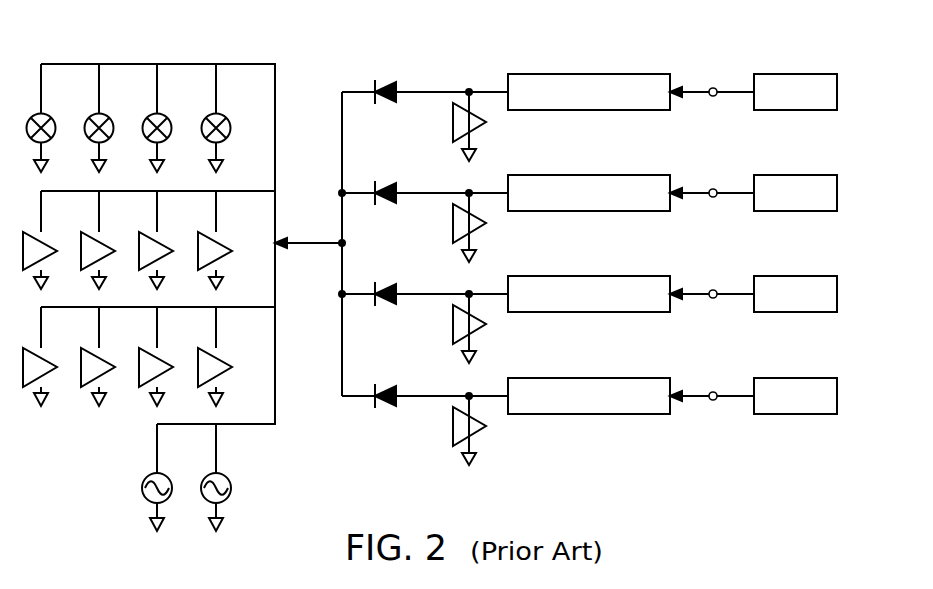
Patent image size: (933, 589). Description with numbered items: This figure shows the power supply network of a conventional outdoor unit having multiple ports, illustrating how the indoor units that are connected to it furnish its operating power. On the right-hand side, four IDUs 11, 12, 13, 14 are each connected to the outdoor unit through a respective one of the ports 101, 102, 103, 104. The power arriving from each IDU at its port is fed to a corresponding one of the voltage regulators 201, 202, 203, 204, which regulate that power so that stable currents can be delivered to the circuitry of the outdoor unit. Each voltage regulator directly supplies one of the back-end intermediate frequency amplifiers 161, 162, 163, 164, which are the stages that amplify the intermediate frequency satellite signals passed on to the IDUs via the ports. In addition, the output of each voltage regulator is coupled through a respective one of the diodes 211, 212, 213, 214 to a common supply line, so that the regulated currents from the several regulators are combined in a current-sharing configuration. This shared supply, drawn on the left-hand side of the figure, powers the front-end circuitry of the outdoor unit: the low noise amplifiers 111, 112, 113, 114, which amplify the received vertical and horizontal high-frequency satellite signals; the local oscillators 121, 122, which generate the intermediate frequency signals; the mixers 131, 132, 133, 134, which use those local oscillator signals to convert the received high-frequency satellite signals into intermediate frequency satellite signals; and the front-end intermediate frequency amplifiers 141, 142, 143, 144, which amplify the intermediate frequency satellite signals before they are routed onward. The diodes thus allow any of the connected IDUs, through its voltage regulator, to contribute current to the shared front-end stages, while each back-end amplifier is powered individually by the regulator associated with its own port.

The IDU 11 is at (837, 92).
The IDU 12 is at (837, 193).
The IDU 13 is at (837, 294).
The IDU 14 is at (837, 396).
The port 101 is at (713, 87).
The port 102 is at (713, 188).
The port 103 is at (713, 289).
The port 104 is at (713, 391).
The low noise amplifier 111 is at (47, 356).
The low noise amplifier 112 is at (105, 356).
The low noise amplifier 113 is at (163, 356).
The low noise amplifier 114 is at (222, 356).
The local oscillator 121 is at (168, 474).
The local oscillator 122 is at (227, 474).
The mixer 131 is at (52, 116).
The mixer 132 is at (110, 116).
The mixer 133 is at (168, 116).
The mixer 134 is at (227, 116).
The front-end intermediate frequency amplifier 141 is at (47, 241).
The front-end intermediate frequency amplifier 142 is at (105, 241).
The front-end intermediate frequency amplifier 143 is at (163, 241).
The front-end intermediate frequency amplifier 144 is at (222, 241).
The back-end intermediate frequency amplifier 161 is at (452, 121).
The back-end intermediate frequency amplifier 162 is at (452, 222).
The back-end intermediate frequency amplifier 163 is at (452, 323).
The back-end intermediate frequency amplifier 164 is at (452, 425).
The voltage regulator 201 is at (588, 74).
The voltage regulator 202 is at (588, 175).
The voltage regulator 203 is at (588, 276).
The voltage regulator 204 is at (588, 378).
The diode 211 is at (386, 82).
The diode 212 is at (386, 183).
The diode 213 is at (386, 284).
The diode 214 is at (386, 386).